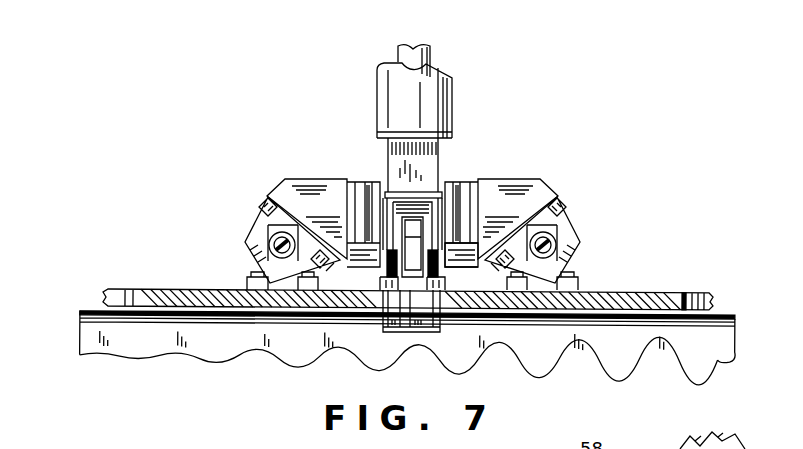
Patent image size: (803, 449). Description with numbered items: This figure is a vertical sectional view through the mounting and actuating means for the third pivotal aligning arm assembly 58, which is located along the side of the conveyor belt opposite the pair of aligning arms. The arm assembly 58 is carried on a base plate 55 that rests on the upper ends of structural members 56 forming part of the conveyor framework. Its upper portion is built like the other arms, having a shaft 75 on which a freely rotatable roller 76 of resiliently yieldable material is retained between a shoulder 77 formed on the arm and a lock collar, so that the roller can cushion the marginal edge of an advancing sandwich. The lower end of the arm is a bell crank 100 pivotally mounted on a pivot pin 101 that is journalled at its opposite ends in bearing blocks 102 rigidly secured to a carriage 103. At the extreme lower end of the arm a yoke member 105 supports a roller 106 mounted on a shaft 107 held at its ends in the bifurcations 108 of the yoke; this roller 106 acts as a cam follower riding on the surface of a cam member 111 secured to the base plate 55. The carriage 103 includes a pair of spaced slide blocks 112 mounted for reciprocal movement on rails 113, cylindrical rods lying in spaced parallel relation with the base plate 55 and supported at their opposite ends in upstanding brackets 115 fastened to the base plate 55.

The base plate 55 is at (670, 293).
The structural members 56 is at (642, 353).
The third pivotal aligning arm assembly 58 is at (376, 101).
The shaft 75 is at (737, 443).
The roller 76 is at (450, 88).
The shoulder 77 is at (453, 135).
The bell crank 100 is at (440, 178).
The pivot pin 101 is at (482, 213).
The bearing blocks 102 is at (358, 180).
The carriage 103 is at (555, 179).
The yoke member 105 is at (405, 192).
The roller 106 is at (402, 322).
The shaft 107 is at (388, 250).
The bifurcations 108 is at (380, 290).
The cam member 111 is at (388, 318).
The slide blocks 112 is at (250, 242).
The rails 113 is at (270, 240).
The upstanding brackets 115 is at (252, 275).